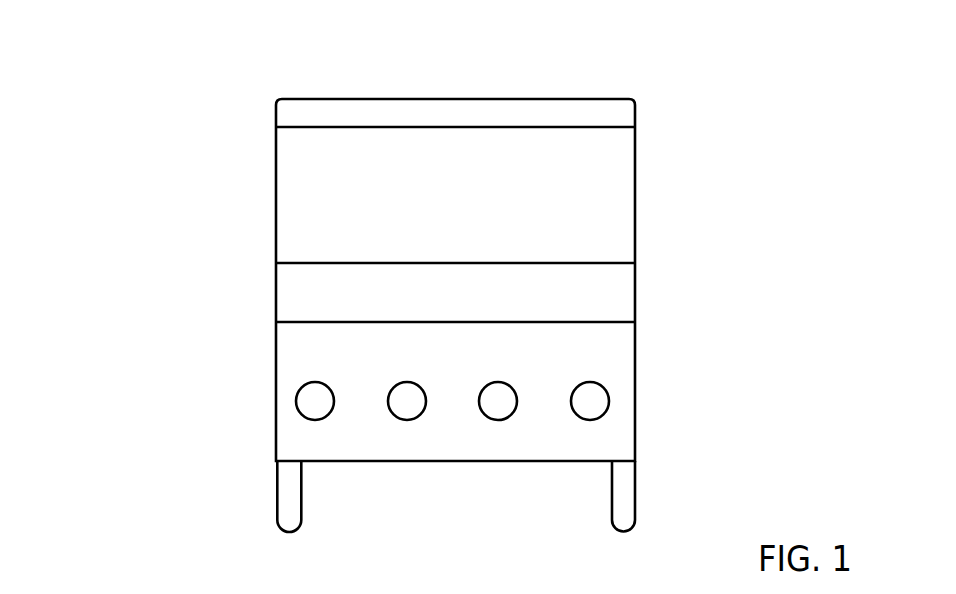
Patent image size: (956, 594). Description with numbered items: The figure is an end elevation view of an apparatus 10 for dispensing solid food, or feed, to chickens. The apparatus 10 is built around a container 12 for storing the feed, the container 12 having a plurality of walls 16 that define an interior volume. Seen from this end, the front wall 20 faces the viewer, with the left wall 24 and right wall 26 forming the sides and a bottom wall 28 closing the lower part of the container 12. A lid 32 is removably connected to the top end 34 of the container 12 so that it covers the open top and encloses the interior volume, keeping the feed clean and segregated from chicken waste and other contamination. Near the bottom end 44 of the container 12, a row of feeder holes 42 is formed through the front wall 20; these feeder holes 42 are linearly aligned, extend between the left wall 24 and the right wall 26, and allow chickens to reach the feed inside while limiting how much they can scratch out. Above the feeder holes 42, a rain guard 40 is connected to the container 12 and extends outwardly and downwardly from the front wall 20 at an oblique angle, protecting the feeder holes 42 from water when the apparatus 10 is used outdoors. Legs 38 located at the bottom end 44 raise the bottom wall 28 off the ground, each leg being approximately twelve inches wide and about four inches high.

The apparatus 10 is at (717, 160).
The container 12 is at (638, 235).
The walls 16 is at (260, 257).
The front wall 20 is at (498, 173).
The left wall 24 is at (270, 197).
The right wall 26 is at (638, 192).
The bottom wall 28 is at (482, 463).
The lid 32 is at (550, 98).
The top end 34 is at (252, 107).
The legs 38 is at (277, 497).
The rain guard 40 is at (618, 323).
The feeder holes 42 is at (330, 387).
The bottom end 44 is at (247, 543).